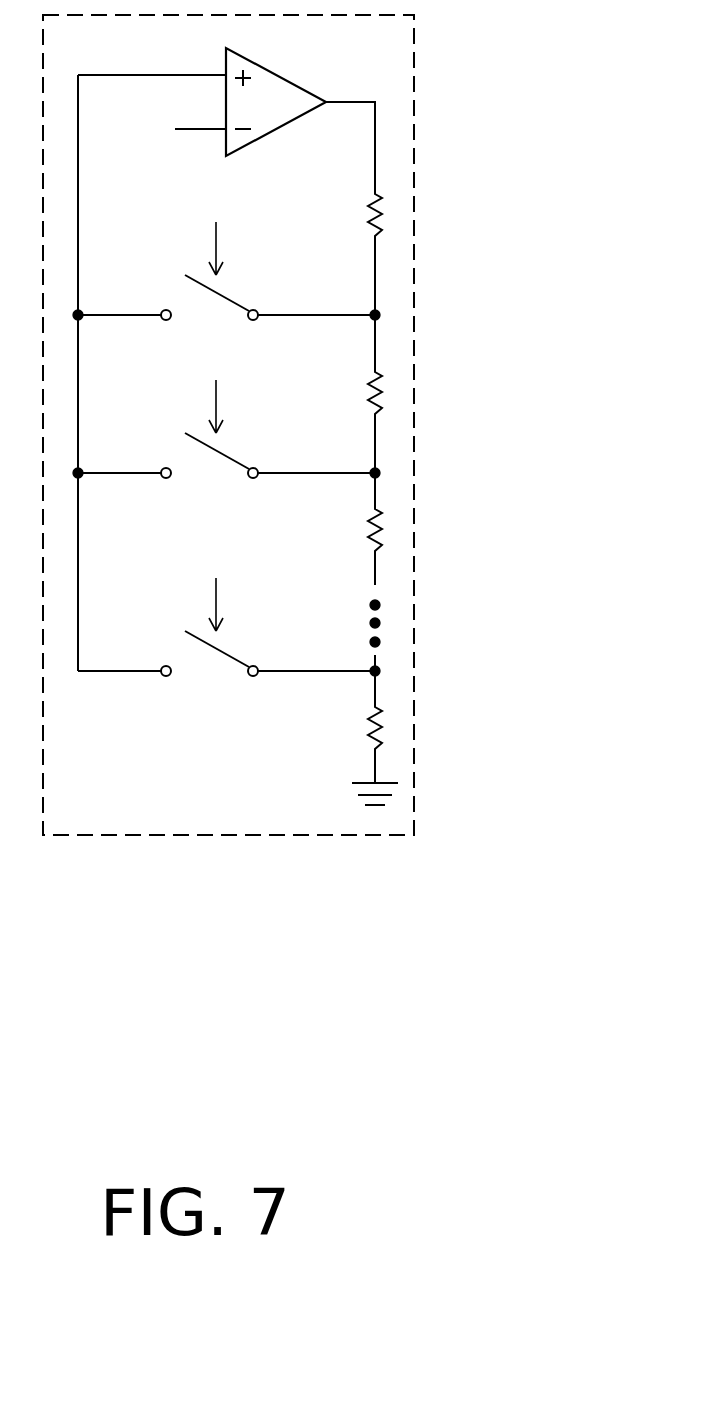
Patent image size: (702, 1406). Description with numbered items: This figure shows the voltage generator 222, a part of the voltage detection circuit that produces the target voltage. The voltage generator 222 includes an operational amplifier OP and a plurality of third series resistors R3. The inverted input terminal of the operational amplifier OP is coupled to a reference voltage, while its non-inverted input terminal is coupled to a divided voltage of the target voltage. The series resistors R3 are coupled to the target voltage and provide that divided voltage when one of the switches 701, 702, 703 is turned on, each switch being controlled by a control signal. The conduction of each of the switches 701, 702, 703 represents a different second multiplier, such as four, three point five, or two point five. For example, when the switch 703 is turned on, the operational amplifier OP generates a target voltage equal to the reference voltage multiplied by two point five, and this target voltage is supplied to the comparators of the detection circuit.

The voltage generator 222 is at (196, 836).
The switch 701 is at (195, 322).
The switch 702 is at (195, 480).
The switch 703 is at (195, 678).
The operational amplifier OP is at (275, 68).
The third series resistors R3 is at (367, 217).